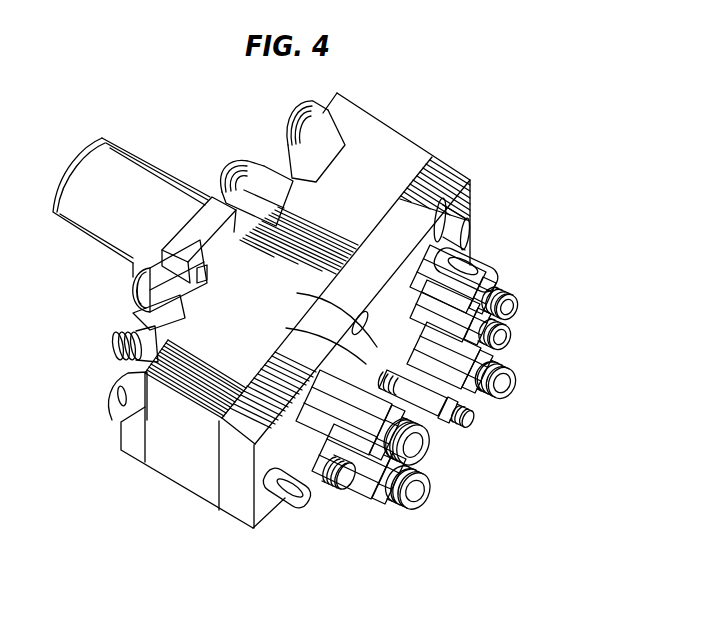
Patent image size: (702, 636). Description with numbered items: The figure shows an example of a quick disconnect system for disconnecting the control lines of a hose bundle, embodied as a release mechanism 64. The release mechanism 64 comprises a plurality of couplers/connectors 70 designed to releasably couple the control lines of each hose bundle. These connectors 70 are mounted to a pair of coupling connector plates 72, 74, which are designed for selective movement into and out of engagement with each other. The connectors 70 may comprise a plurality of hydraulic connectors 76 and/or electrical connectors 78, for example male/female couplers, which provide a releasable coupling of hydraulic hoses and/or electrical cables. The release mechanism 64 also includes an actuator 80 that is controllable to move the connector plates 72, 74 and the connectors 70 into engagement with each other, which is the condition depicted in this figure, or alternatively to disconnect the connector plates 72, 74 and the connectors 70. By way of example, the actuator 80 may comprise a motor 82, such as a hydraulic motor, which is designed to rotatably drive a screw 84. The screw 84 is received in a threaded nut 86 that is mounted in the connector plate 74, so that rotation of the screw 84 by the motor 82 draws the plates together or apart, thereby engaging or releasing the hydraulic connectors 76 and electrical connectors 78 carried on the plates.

The release mechanism 64 is at (433, 118).
The couplers/connectors 70 is at (528, 294).
The coupling connector plate 72 is at (172, 462).
The coupling connector plate 74 is at (235, 508).
The hydraulic connectors 76 is at (523, 365).
The electrical connectors 78 is at (472, 218).
The actuator 80 is at (153, 147).
The motor 82 is at (138, 217).
The screw 84 is at (321, 315).
The threaded nut 86 is at (286, 328).